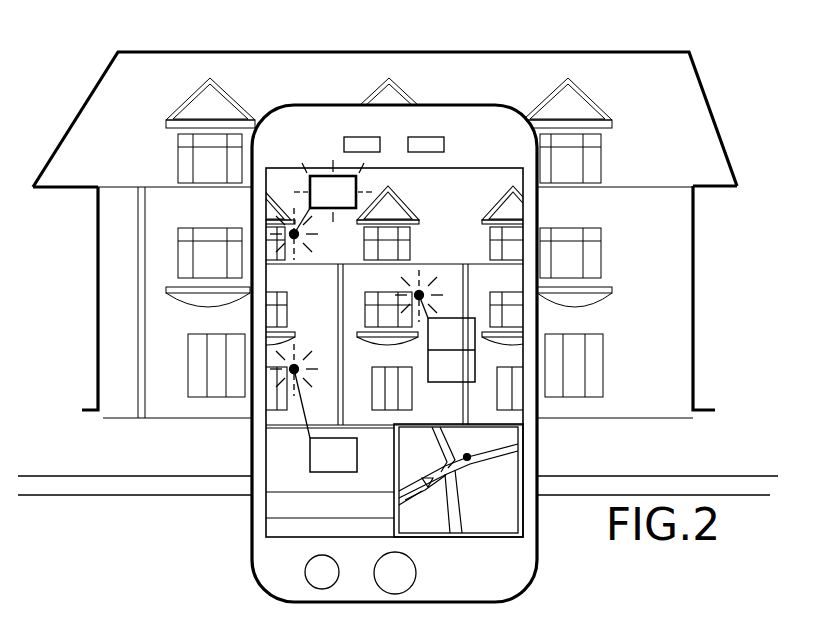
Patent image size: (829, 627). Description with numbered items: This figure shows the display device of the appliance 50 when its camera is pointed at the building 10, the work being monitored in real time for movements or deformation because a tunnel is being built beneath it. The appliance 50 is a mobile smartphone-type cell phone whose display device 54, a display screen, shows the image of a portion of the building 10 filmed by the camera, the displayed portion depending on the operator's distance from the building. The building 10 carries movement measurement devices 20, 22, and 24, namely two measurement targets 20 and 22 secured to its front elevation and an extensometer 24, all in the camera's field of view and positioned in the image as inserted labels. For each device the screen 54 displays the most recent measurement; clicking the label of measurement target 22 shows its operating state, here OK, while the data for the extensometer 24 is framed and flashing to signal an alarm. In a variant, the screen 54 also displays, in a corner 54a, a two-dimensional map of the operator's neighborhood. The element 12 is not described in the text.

The building 10 is at (724, 101).
The building facade 12 is at (677, 348).
The measurement target 20 is at (297, 362).
The measurement target 22 is at (422, 290).
The extensometer 24 is at (302, 236).
The appliance 50 is at (525, 588).
The display device 54 is at (392, 352).
The corner 54a is at (492, 507).